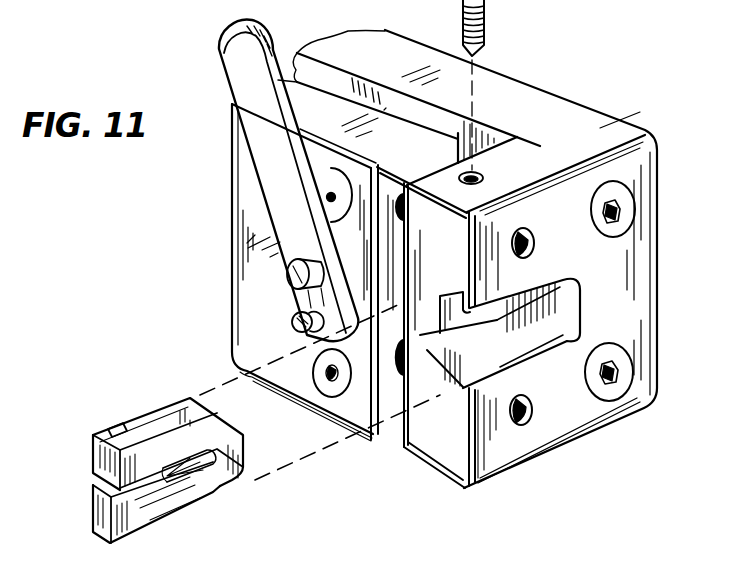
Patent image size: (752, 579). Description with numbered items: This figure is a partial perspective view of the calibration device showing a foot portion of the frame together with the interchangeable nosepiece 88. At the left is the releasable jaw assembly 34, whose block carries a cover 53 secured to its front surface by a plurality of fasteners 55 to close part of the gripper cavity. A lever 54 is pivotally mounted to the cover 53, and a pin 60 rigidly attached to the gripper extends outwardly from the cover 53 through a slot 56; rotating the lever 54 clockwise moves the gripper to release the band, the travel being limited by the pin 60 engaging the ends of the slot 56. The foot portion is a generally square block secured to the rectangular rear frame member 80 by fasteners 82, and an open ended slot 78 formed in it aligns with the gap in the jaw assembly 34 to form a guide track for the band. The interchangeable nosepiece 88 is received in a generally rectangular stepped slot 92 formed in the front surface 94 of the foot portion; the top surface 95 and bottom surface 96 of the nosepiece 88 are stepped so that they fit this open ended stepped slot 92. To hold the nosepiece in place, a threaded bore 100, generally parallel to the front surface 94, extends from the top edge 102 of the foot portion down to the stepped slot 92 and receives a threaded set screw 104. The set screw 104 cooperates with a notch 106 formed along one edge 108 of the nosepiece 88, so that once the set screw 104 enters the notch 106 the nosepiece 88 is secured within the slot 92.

The releasable jaw assembly 34 is at (220, 250).
The cover 53 is at (328, 148).
The lever 54 is at (271, 50).
The fasteners 55 is at (326, 183).
The slot 56 is at (299, 333).
The pin 60 is at (296, 316).
The open ended slot 78 is at (403, 432).
The rear frame member 80 is at (533, 85).
The fasteners 82 is at (630, 215).
The interchangeable nosepiece 88 is at (102, 450).
The stepped slot 92 is at (494, 395).
The front surface 94 is at (578, 426).
The top surface 95 is at (177, 440).
The bottom surface 96 is at (123, 528).
The bore 100 is at (482, 172).
The top edge 102 is at (602, 128).
The set screw 104 is at (486, 13).
The notch 106 is at (117, 430).
The edge 108 is at (147, 418).